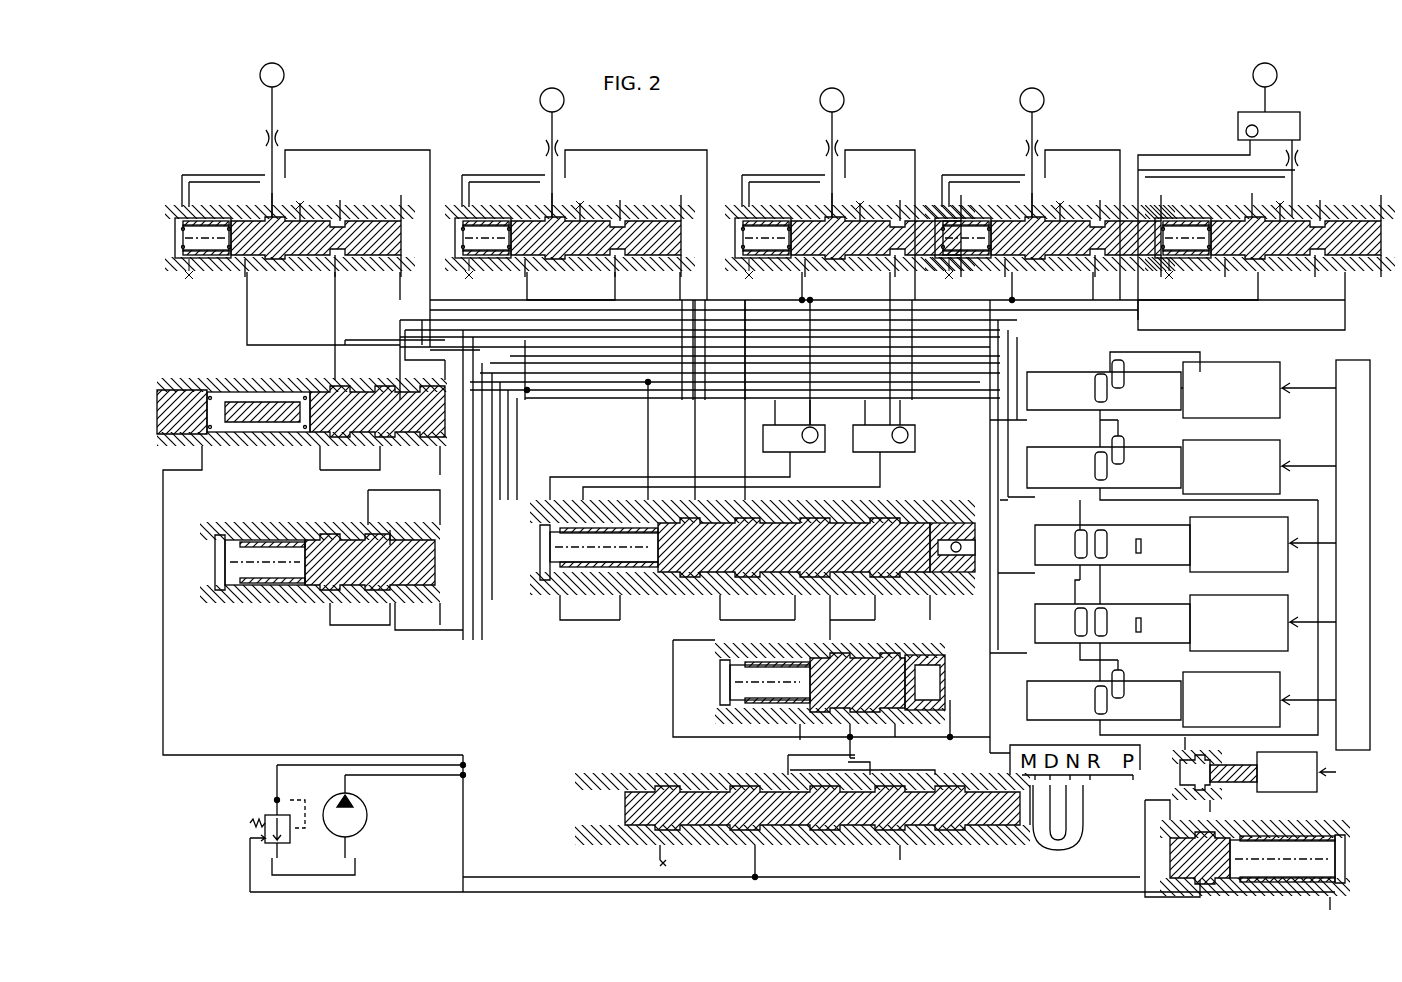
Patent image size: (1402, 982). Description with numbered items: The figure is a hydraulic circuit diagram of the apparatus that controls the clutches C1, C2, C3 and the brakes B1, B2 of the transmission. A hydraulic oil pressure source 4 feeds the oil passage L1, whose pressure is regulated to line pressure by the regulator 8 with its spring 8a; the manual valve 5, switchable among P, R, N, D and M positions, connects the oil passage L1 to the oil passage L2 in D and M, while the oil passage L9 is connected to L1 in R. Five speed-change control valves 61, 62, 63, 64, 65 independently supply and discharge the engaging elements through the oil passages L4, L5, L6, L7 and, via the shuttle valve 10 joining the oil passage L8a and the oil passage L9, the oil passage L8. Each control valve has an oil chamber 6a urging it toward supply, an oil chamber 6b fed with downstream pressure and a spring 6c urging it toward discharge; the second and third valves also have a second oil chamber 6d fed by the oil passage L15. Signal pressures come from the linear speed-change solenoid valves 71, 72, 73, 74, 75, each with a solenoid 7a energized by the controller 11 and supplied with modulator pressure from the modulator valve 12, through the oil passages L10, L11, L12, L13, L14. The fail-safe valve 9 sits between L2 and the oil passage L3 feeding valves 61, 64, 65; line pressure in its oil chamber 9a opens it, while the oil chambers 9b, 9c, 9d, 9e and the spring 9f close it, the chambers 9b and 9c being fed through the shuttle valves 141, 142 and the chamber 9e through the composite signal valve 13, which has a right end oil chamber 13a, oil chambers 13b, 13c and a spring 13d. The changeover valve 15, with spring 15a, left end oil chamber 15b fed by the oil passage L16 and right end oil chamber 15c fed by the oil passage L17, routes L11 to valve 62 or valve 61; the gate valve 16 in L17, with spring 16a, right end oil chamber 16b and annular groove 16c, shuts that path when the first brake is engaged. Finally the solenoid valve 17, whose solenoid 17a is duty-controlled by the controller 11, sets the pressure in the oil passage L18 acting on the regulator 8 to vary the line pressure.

The hydraulic oil pressure source 4 is at (367, 816).
The manual valve 5 is at (923, 852).
The first speed-change control valve 61 is at (862, 194).
The second speed-change control valve 62 is at (594, 198).
The third speed-change control valve 63 is at (309, 201).
The fourth speed-change control valve 64 is at (1066, 194).
The fifth speed-change control valve 65 is at (1318, 192).
The oil chamber 6a is at (335, 210).
The oil chamber 6b is at (208, 255).
The spring 6c is at (182, 252).
The second oil chamber 6d is at (402, 205).
The first speed-change solenoid valve 71 is at (1143, 438).
The second speed-change solenoid valve 72 is at (1140, 518).
The third speed-change solenoid valve 73 is at (1145, 598).
The fourth speed-change solenoid valve 74 is at (1149, 363).
The fifth speed-change solenoid valve 75 is at (1143, 673).
The solenoid 7a is at (1259, 544).
The regulator 8 is at (285, 804).
The spring 8a is at (245, 823).
The fail-safe valve 9 is at (919, 500).
The oil chamber 9a is at (885, 592).
The oil chamber 9b is at (551, 585).
The oil chamber 9c is at (606, 585).
The oil chamber 9d is at (757, 585).
The oil chamber 9e is at (842, 585).
The spring 9f is at (576, 585).
The shuttle valve 10 is at (1295, 112).
The controller 11 is at (1353, 555).
The modulator valve 12 is at (1313, 802).
The composite signal valve 13 is at (841, 648).
The right end oil chamber 13a is at (900, 653).
The oil chamber 13b is at (730, 708).
The oil chamber 13c is at (788, 656).
The spring 13d is at (722, 662).
The shuttle valve 141 is at (812, 452).
The shuttle valve 142 is at (915, 438).
The changeover valve 15 is at (238, 453).
The spring 15a is at (264, 405).
The left end oil chamber 15b is at (217, 400).
The right end oil chamber 15c is at (433, 385).
The gate valve 16 is at (290, 523).
The spring 16a is at (258, 595).
The right end oil chamber 16b is at (425, 598).
The annular groove 16c is at (328, 595).
The solenoid valve 17 is at (1256, 802).
The solenoid 17a is at (1296, 772).
The first clutch C1 is at (820, 100).
The second clutch C2 is at (540, 100).
The third clutch C3 is at (284, 75).
The first brake B1 is at (1020, 100).
The second brake B2 is at (1253, 75).
The oil passage L1 is at (247, 293).
The oil passage L2 is at (527, 293).
The oil passage L3 is at (695, 442).
The oil passage L4 is at (830, 128).
The oil passage L5 is at (550, 128).
The oil passage L6 is at (272, 105).
The oil passage L7 is at (1030, 128).
The oil passage L8 is at (1258, 102).
The oil passage L8a is at (1295, 145).
The oil passage L9 is at (1178, 155).
The oil passage L10 is at (318, 462).
The oil passage L11 is at (380, 462).
The oil passage L12 is at (1076, 586).
The oil passage L13 is at (1080, 348).
The oil passage L14 is at (1076, 663).
The oil passage L15 is at (645, 440).
The oil passage L16 is at (163, 503).
The oil passage L17 is at (364, 505).
The oil passage L18 is at (412, 892).